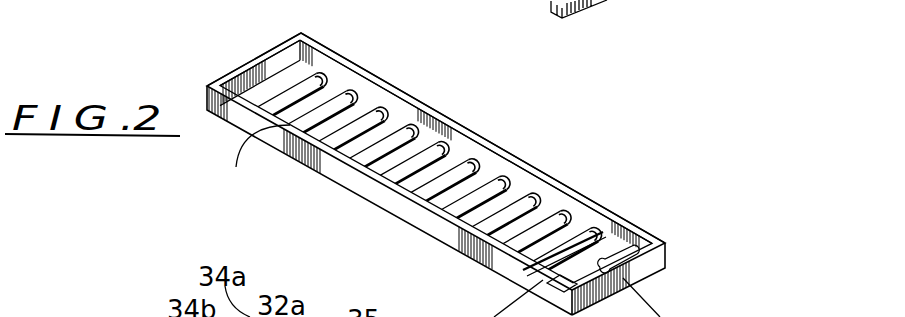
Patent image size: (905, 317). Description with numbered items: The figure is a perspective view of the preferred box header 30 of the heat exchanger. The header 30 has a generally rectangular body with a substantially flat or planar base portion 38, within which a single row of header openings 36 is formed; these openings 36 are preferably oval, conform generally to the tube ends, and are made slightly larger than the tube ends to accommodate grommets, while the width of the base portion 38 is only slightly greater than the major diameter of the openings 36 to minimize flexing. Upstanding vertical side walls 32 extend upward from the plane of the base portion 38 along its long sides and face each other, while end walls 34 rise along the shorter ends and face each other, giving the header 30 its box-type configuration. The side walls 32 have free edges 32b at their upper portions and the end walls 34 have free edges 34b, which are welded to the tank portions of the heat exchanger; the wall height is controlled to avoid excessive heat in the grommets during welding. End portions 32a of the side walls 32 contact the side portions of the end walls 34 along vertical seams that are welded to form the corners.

The header 30 is at (690, 272).
The side walls 32 is at (567, 197).
The side wall end portions 32a is at (478, 140).
The free edges of side walls 32b is at (247, 163).
The end walls 34 is at (254, 69).
The free edges of end walls 34b is at (273, 53).
The header openings 36 is at (380, 113).
The base portion 38 is at (573, 230).